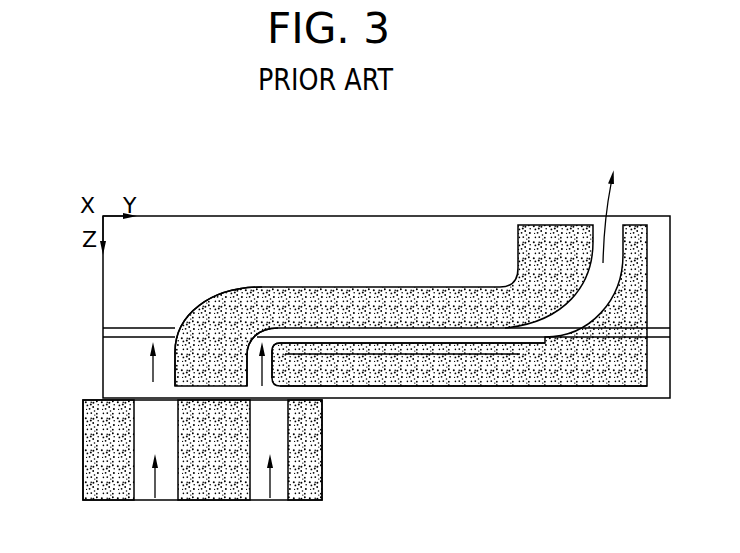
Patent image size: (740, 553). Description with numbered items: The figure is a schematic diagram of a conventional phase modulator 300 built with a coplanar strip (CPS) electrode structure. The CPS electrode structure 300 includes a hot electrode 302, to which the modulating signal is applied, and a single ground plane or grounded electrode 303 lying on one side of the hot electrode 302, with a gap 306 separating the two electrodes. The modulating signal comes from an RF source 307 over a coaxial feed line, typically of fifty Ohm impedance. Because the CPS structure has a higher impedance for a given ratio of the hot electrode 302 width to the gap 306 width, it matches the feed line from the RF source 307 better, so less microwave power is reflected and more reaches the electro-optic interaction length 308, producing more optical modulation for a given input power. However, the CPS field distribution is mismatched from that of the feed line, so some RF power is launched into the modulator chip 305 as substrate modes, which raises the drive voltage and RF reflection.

The phase modulator 300 is at (371, 206).
The hot electrode 302 is at (180, 386).
The grounded electrode 303 is at (300, 377).
The modulator chip 305 is at (647, 390).
The gap 306 is at (408, 316).
The RF source 307 is at (338, 474).
The electro-optic interaction length 308 is at (402, 370).